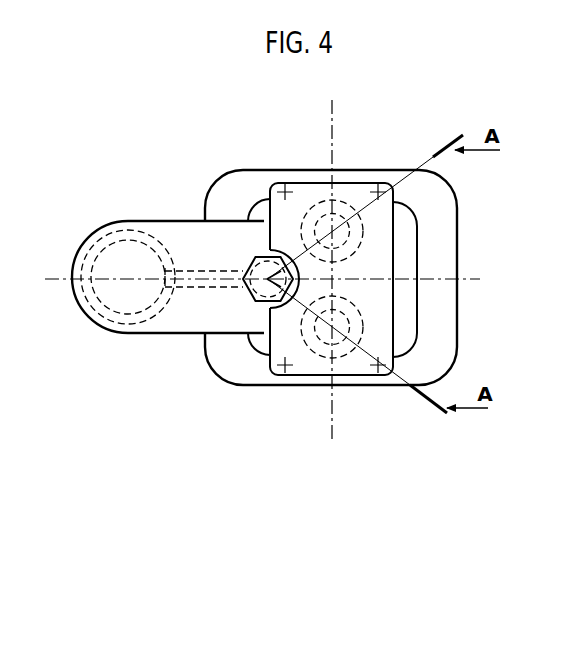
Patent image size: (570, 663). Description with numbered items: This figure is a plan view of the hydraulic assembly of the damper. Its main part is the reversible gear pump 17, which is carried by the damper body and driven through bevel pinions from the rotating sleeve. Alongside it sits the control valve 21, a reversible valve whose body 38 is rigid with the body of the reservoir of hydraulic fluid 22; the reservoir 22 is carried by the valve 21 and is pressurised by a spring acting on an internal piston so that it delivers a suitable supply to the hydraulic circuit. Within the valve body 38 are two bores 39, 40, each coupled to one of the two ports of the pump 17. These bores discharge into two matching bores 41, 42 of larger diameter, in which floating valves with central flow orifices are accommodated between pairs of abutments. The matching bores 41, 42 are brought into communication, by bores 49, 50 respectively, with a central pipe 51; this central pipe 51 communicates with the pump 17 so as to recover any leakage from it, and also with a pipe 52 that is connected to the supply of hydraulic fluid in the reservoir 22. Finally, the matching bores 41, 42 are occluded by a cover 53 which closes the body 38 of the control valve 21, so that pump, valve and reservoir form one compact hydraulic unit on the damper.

The gear pump 17 is at (435, 328).
The control valve 21 is at (400, 250).
The reservoir of hydraulic fluid 22 is at (93, 327).
The body of the control valve 38 is at (253, 237).
The bore 39 is at (335, 332).
The bore 40 is at (338, 222).
The matching bore 41 is at (317, 340).
The matching bore 42 is at (322, 214).
The bore 49 is at (297, 303).
The bore 50 is at (263, 217).
The central pipe 51 is at (255, 299).
The pipe 52 is at (187, 292).
The cover 53 is at (377, 295).